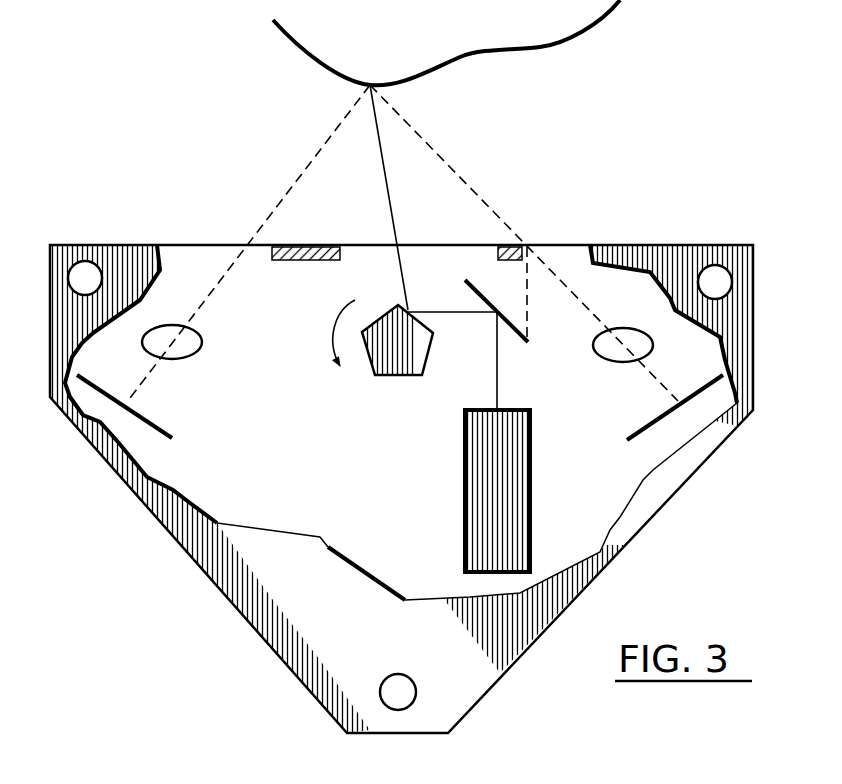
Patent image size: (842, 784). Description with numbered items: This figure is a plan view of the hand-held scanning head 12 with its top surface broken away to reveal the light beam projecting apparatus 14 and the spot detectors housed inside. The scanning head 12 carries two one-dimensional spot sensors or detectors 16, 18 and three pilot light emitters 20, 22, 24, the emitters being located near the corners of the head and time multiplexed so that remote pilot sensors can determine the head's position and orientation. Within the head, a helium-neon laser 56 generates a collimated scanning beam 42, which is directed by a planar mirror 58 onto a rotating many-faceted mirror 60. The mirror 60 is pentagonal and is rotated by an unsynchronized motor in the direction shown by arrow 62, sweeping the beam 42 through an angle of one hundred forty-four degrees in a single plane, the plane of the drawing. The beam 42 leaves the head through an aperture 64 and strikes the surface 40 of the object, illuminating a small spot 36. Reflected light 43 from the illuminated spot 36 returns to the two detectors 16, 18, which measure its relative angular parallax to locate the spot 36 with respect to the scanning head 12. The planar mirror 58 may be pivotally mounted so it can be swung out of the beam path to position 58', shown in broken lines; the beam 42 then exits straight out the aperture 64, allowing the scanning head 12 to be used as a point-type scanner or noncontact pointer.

The scanning head 12 is at (181, 547).
The light beam projecting apparatus 14 is at (358, 441).
The one-dimensional spot sensor 16 is at (186, 377).
The one-dimensional spot sensor 18 is at (630, 403).
The pilot light emitter 20 is at (86, 260).
The pilot light emitter 22 is at (718, 264).
The pilot light emitter 24 is at (417, 690).
The illuminated spot 36 is at (373, 88).
The surface 40 is at (567, 42).
The scanning beam 42 is at (400, 232).
The reflected light 43 is at (293, 182).
The helium-neon laser 56 is at (465, 472).
The planar mirror 58 is at (513, 333).
The mirror position 58' is at (574, 294).
The rotating many-faceted mirror 60 is at (400, 377).
The arrow 62 is at (336, 338).
The aperture 64 is at (360, 216).